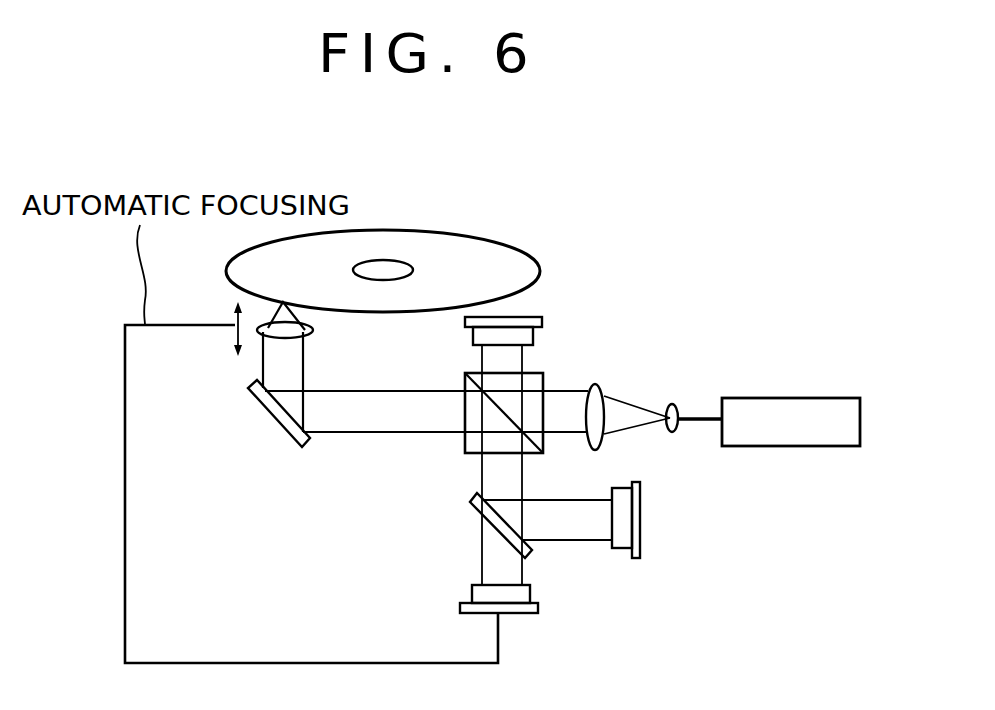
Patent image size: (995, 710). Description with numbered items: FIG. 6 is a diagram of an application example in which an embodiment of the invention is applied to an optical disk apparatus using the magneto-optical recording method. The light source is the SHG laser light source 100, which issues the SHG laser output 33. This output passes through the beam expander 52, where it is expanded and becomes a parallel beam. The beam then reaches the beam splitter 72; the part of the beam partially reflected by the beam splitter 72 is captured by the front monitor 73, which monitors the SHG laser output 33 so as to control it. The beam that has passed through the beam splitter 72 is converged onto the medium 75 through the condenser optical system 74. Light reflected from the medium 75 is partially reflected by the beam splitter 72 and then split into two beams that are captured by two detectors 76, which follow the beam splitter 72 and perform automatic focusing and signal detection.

The medium 75 is at (485, 250).
The condenser optical system 74 is at (243, 360).
The front monitor 73 is at (537, 315).
The beam splitter 72 is at (535, 380).
The beam expander 52 is at (663, 372).
The SHG laser output 33 is at (703, 380).
The SHG laser light source 100 is at (780, 398).
The detectors 76 is at (652, 532).